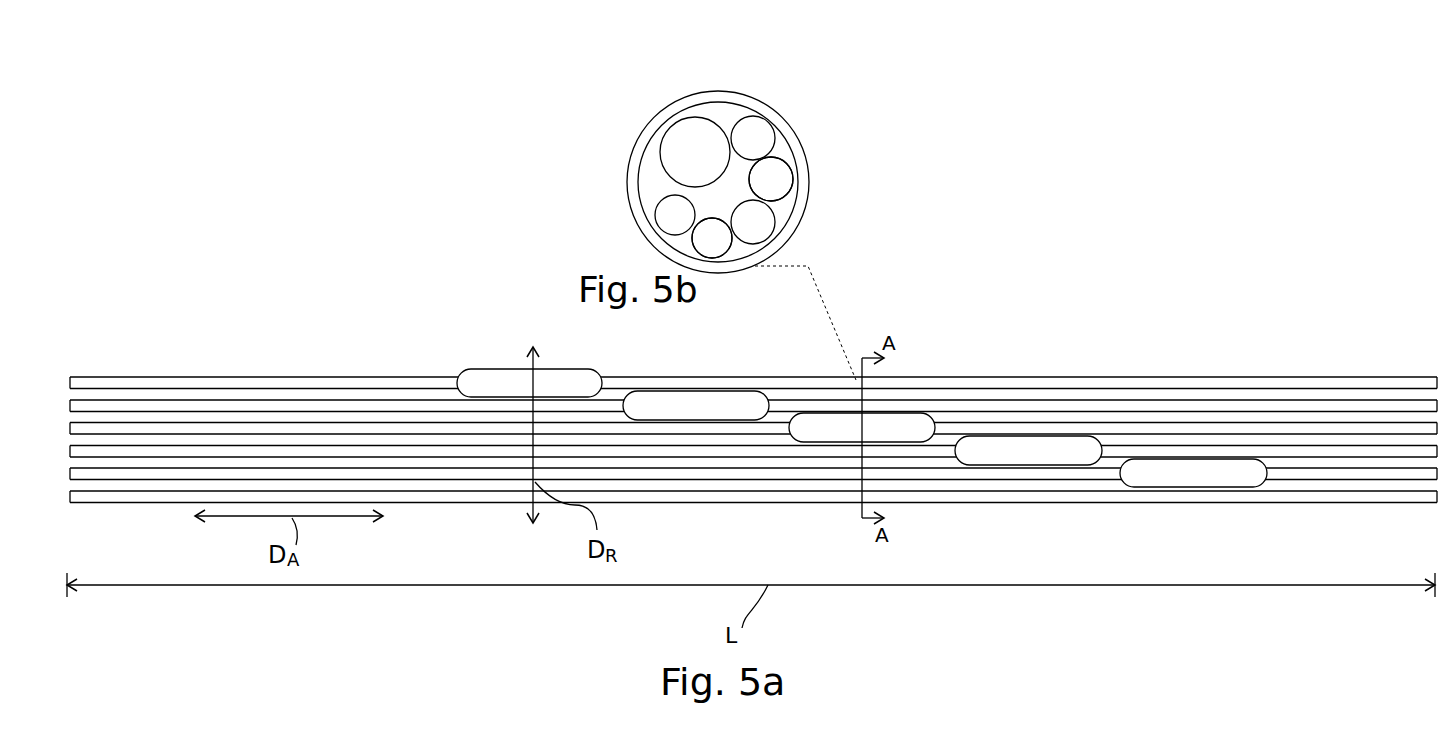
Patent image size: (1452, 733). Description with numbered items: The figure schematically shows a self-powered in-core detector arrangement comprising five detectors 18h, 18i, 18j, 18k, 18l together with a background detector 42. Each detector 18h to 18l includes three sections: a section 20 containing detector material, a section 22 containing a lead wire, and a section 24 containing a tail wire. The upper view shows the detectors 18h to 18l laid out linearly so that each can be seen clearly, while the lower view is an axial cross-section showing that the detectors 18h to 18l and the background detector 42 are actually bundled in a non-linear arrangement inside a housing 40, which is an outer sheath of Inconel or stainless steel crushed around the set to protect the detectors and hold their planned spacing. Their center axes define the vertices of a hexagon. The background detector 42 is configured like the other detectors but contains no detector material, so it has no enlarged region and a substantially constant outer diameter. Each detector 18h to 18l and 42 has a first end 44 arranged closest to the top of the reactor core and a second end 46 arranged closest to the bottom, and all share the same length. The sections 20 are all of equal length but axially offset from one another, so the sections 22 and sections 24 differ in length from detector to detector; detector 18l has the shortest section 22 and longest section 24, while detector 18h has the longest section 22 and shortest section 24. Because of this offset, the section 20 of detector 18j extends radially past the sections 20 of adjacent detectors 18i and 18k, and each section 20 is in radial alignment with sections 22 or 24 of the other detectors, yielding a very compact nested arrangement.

In FIG. 5a, the detector 18h is at (1113, 462).
In FIG. 5b, the detector 18h is at (720, 262).
In FIG. 5a, the detector 18i is at (1165, 437).
In FIG. 5b, the detector 18i is at (650, 222).
In FIG. 5a, the detector 18j is at (1208, 417).
In FIG. 5b, the detector 18j is at (678, 115).
In FIG. 5a, the detector 18k is at (1266, 395).
In FIG. 5b, the detector 18k is at (780, 135).
In FIG. 5a, the detector 18l is at (1312, 370).
In FIG. 5b, the detector 18l is at (797, 165).
In FIG. 5a, the section 20 is at (481, 380).
In FIG. 5b, the section 20 is at (678, 162).
In FIG. 5a, the section 22 is at (320, 378).
In FIG. 5b, the section 22 is at (673, 220).
In FIG. 5a, the section 24 is at (673, 382).
In FIG. 5b, the section 24 is at (753, 133).
In FIG. 5b, the housing 40 is at (737, 97).
In FIG. 5a, the background detector 42 is at (1107, 507).
In FIG. 5b, the background detector 42 is at (787, 213).
In FIG. 5a, the first end 44 is at (84, 352).
In FIG. 5a, the second end 46 is at (1427, 358).